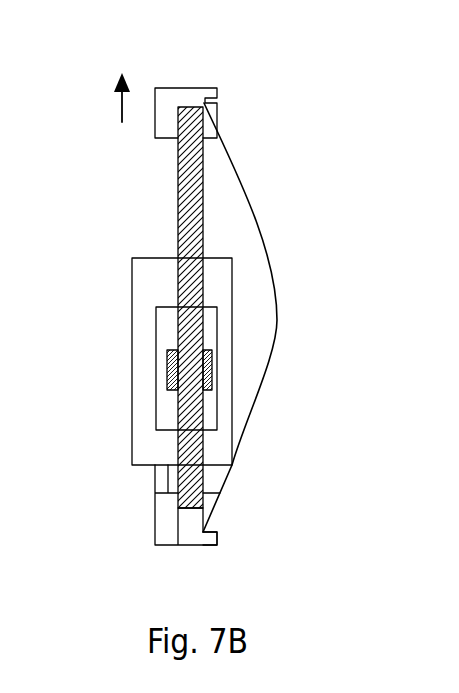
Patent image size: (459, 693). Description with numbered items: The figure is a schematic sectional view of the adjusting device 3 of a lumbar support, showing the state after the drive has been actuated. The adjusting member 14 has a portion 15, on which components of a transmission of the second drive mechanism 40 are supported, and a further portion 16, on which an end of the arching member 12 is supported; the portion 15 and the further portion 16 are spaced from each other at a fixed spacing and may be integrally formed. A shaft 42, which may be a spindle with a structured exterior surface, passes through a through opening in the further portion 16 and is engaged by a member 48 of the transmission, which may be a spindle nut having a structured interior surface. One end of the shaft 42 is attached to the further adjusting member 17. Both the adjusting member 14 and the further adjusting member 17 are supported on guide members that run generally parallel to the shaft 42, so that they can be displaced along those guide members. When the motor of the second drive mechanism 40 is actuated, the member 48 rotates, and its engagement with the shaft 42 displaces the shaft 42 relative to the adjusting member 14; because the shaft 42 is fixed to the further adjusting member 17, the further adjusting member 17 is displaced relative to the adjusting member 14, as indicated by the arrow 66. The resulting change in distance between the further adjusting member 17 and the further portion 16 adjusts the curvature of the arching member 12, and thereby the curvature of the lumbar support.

The adjusting device 3 is at (283, 117).
The arching member 12 is at (277, 320).
The adjusting member 14 is at (123, 493).
The portion 15 is at (131, 455).
The further portion 16 is at (216, 539).
The further adjusting member 17 is at (203, 85).
The second drive mechanism 40 is at (157, 307).
The shaft 42 is at (177, 172).
The member 48 is at (164, 380).
The arrow 66 is at (122, 108).